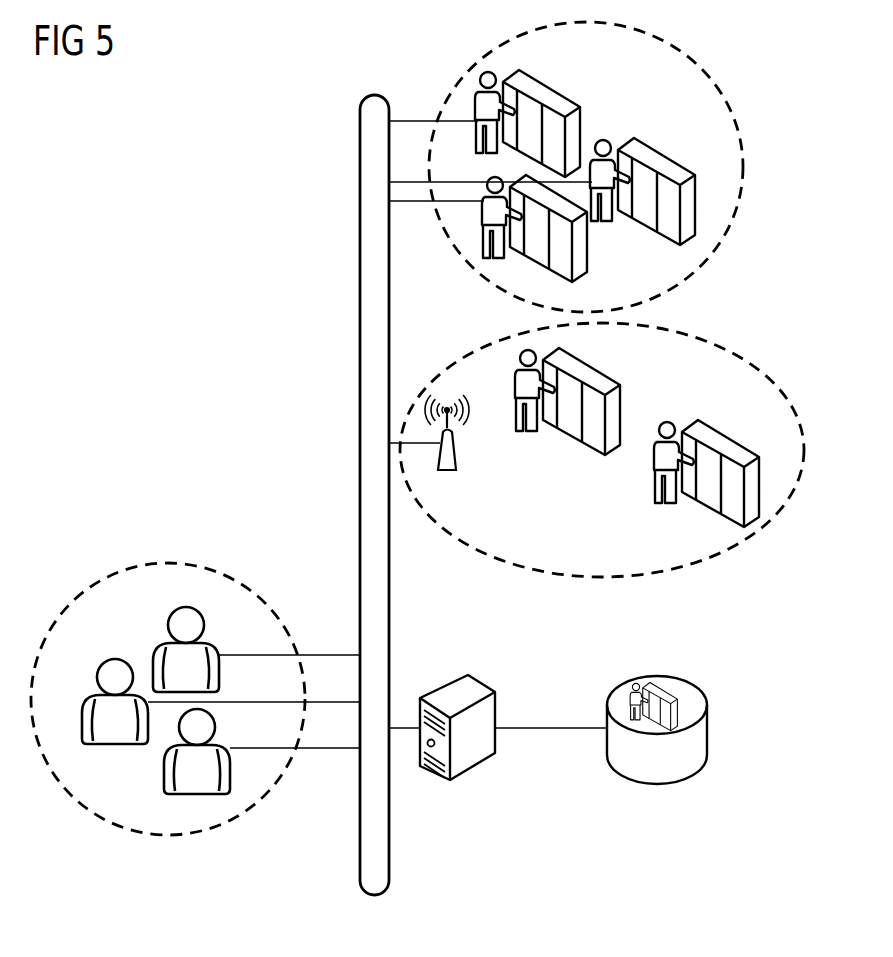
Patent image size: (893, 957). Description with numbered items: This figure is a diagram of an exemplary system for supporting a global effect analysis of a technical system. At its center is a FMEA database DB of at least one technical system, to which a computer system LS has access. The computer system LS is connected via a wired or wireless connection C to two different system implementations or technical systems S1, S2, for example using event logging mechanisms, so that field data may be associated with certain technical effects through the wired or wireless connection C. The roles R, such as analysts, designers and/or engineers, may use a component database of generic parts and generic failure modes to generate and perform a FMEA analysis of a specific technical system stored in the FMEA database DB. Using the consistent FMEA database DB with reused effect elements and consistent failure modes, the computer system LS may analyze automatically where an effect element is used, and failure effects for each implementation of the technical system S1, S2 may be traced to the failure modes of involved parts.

The technical system S1 is at (743, 170).
The technical system S2 is at (607, 579).
The roles R is at (167, 562).
The wired or wireless connection C is at (389, 605).
The computer system LS is at (474, 772).
The FMEA database DB is at (708, 733).